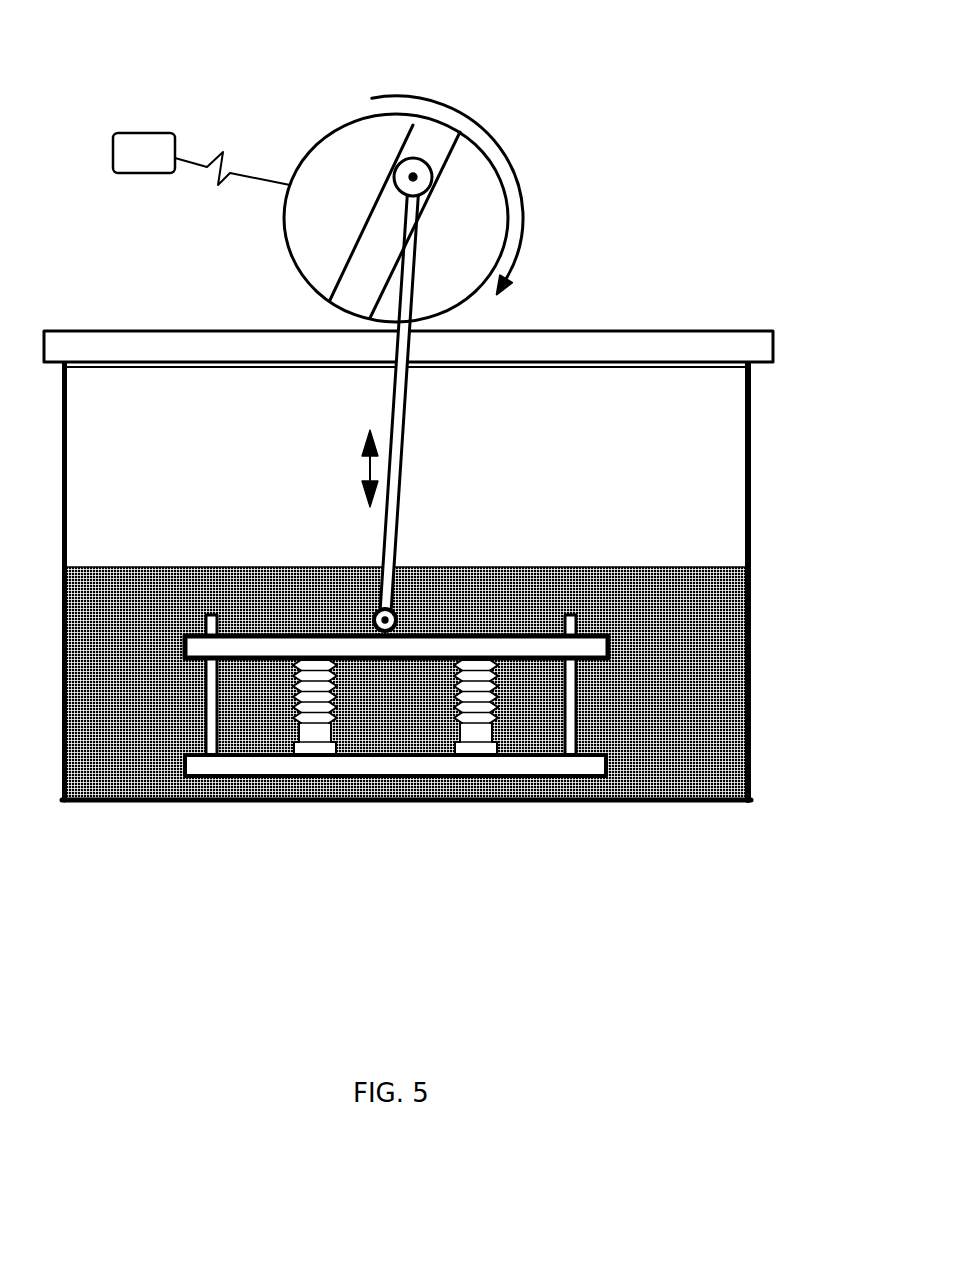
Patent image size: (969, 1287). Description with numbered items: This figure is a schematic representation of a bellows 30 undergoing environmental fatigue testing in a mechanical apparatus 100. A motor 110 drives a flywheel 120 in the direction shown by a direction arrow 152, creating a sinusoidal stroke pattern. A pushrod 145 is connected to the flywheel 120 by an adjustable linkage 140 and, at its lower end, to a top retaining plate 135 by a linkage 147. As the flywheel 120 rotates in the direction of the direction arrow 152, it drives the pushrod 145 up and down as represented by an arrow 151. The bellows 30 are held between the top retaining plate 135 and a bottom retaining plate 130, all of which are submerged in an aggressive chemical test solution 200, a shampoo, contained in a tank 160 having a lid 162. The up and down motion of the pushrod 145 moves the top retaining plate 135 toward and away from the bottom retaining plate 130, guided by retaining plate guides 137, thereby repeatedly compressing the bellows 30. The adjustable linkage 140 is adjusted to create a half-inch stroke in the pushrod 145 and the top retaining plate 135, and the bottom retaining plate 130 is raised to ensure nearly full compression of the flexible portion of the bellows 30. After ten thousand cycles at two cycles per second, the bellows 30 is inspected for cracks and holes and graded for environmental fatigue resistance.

The bellows 30 is at (331, 762).
The mechanical apparatus 100 is at (538, 172).
The motor 110 is at (113, 143).
The flywheel 120 is at (343, 153).
The bottom retaining plate 130 is at (582, 765).
The top retaining plate 135 is at (598, 662).
The retaining plate guides 137 is at (207, 617).
The adjustable linkage 140 is at (432, 186).
The pushrod 145 is at (408, 412).
The linkage 147 is at (396, 612).
The arrow 151 is at (365, 472).
The direction arrow 152 is at (490, 128).
The tank 160 is at (750, 522).
The lid 162 is at (774, 333).
The test solution 200 is at (142, 738).